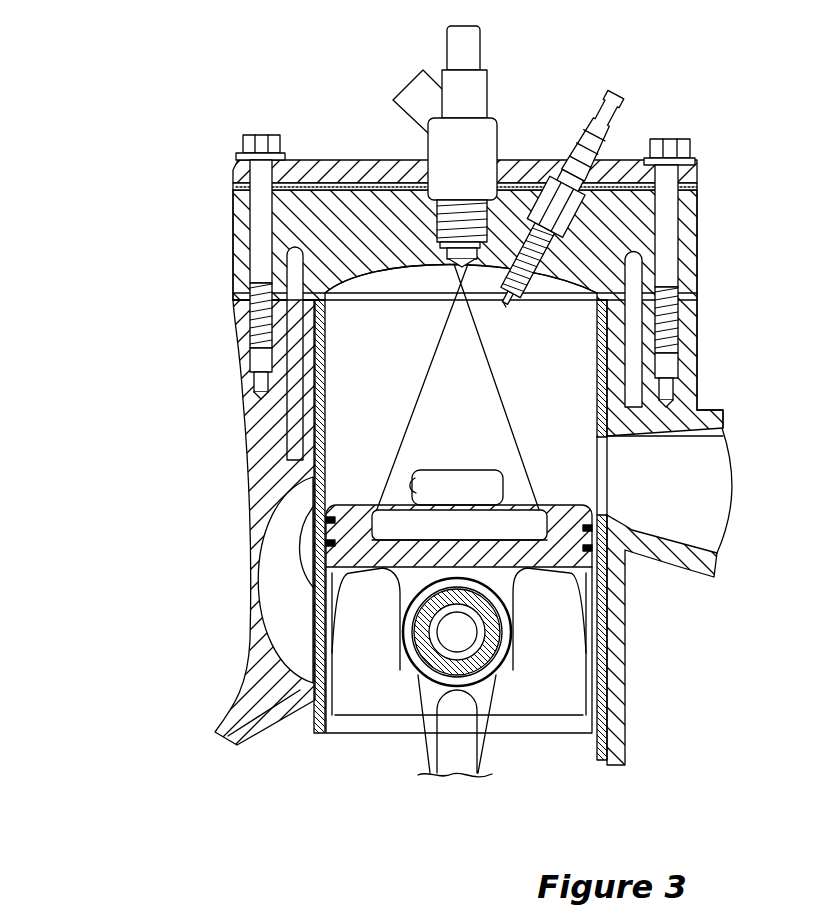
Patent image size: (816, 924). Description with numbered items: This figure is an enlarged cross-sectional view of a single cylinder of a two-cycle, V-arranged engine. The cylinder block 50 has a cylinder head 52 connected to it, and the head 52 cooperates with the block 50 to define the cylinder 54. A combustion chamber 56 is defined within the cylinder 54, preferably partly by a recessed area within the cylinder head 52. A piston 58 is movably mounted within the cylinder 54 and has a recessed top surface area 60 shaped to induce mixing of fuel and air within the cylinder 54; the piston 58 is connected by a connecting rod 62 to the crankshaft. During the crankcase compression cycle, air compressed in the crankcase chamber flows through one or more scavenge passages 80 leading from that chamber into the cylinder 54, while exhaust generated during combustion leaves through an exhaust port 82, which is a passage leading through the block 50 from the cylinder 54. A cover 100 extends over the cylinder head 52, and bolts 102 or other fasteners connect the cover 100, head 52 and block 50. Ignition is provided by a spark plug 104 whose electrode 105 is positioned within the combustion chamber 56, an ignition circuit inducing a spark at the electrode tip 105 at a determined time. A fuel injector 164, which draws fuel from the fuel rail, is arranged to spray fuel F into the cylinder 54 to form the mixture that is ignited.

The cylinder block 50 is at (223, 523).
The cylinder head 52 is at (233, 245).
The cylinder 54 is at (325, 405).
The combustion chamber 56 is at (408, 302).
The piston 58 is at (353, 735).
The recessed top surface area 60 is at (520, 528).
The connecting rod 62 is at (423, 760).
The scavenge passage 80 is at (266, 582).
The exhaust port 82 is at (672, 530).
The cover 100 is at (233, 172).
The bolt 102 is at (262, 135).
The spark plug 104 is at (577, 130).
The electrode 105 is at (508, 308).
The fuel injector 164 is at (482, 41).
The fuel F is at (444, 406).